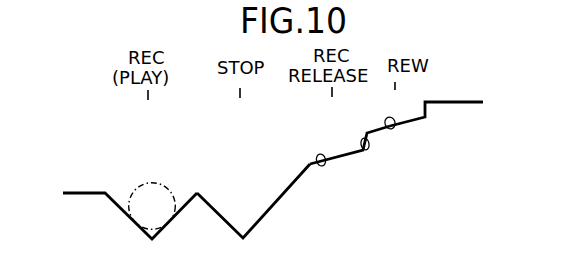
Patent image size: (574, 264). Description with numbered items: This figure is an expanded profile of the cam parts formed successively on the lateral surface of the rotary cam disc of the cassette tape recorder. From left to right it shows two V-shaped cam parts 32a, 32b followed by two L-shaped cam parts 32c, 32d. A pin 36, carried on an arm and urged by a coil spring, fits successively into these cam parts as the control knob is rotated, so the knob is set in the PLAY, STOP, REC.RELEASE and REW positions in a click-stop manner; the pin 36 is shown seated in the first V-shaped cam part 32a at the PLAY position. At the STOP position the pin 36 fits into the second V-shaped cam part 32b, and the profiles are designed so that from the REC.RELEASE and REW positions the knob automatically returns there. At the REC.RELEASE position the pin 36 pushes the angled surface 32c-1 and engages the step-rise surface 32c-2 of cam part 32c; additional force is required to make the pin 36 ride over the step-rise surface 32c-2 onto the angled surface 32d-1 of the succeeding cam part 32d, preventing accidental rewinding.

The V-shaped cam part 32a is at (120, 201).
The V-shaped cam part 32b is at (263, 214).
The L-shaped cam part 32c is at (346, 153).
The angled surface 32c-1 is at (323, 166).
The step-rise surface 32c-2 is at (362, 150).
The L-shaped cam part 32d is at (407, 118).
The angled surface 32d-1 is at (398, 128).
The pin 36 is at (166, 182).